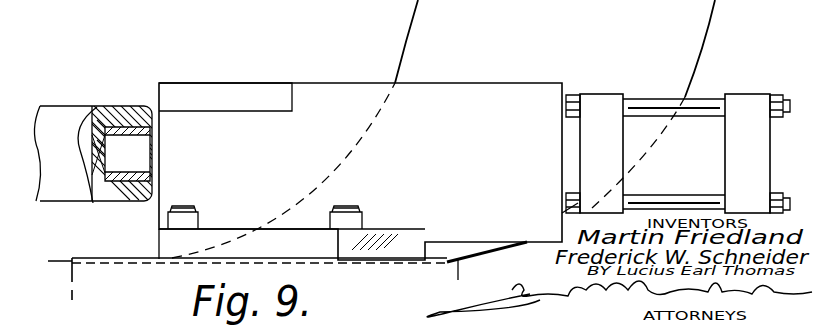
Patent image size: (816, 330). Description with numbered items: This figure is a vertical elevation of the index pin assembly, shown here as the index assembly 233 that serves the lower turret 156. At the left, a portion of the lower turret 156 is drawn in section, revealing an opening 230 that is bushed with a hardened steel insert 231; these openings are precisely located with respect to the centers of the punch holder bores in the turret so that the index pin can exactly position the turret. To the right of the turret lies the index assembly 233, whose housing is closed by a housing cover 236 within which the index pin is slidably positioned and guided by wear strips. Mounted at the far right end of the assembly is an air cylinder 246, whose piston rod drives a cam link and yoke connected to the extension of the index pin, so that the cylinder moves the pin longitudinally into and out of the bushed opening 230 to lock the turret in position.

The lower turret 156 is at (50, 118).
The hardened steel insert 231 is at (127, 127).
The opening 230 is at (127, 150).
The lower turret index assembly 233 is at (201, 60).
The housing cover 236 is at (368, 171).
The air cylinder 246 is at (678, 153).